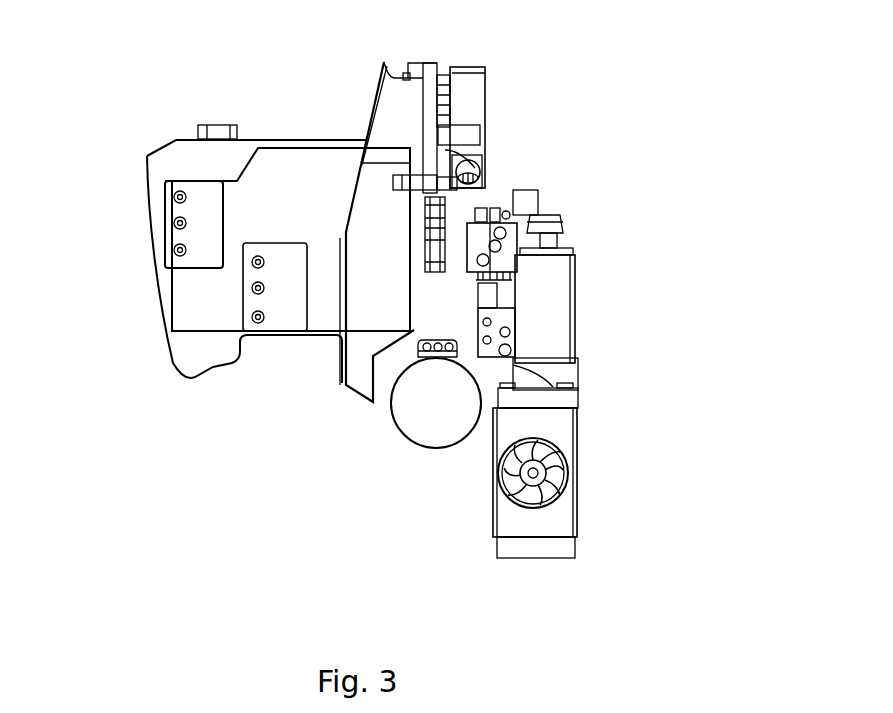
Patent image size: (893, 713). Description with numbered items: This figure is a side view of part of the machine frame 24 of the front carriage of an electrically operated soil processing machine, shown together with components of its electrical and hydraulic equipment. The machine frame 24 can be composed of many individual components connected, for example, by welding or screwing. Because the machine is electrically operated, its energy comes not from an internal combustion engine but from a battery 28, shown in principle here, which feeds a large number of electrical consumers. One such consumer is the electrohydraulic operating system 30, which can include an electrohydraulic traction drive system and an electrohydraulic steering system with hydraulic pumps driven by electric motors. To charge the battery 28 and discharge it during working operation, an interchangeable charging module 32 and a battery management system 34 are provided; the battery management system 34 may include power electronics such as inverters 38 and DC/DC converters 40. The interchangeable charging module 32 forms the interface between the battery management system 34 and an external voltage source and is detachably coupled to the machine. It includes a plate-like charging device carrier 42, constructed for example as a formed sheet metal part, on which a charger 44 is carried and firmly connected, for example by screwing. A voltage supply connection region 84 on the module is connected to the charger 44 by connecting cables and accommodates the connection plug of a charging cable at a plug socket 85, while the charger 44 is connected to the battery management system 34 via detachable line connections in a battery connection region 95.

The machine frame 24 is at (358, 380).
The battery 28 is at (178, 360).
The electrohydraulic operating system 30 is at (603, 408).
The interchangeable charging module 32 is at (513, 57).
The battery management system 34 is at (147, 263).
The inverter 38 is at (283, 318).
The DC/DC converter 40 is at (220, 123).
The charging device carrier 42 is at (437, 62).
The charger 44 is at (487, 103).
The voltage supply connection region 84 is at (480, 148).
The plug socket 85 is at (445, 150).
The battery connection region 95 is at (485, 196).